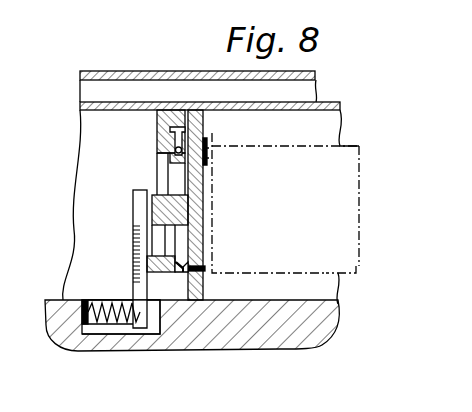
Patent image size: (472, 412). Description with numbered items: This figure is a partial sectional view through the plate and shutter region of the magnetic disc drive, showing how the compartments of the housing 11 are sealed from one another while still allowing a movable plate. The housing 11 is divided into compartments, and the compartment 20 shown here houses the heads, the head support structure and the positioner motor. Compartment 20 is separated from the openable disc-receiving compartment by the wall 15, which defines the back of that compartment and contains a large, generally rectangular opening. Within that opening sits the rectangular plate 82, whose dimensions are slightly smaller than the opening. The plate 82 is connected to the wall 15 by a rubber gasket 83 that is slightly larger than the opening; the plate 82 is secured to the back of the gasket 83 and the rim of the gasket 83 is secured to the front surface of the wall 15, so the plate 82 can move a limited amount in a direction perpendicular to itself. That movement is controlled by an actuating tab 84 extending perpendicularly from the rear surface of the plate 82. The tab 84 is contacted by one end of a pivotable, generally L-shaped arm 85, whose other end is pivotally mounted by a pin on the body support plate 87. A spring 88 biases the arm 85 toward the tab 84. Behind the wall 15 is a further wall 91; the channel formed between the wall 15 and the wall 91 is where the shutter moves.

The housing 11 is at (103, 77).
The wall 15 is at (196, 121).
The compartment 20 is at (85, 153).
The plate 82 is at (203, 203).
The rubber gasket 83 is at (207, 142).
The actuating tab 84 is at (158, 212).
The arm 85 is at (147, 276).
The body support plate 87 is at (67, 335).
The spring 88 is at (84, 314).
The wall 91 is at (157, 141).